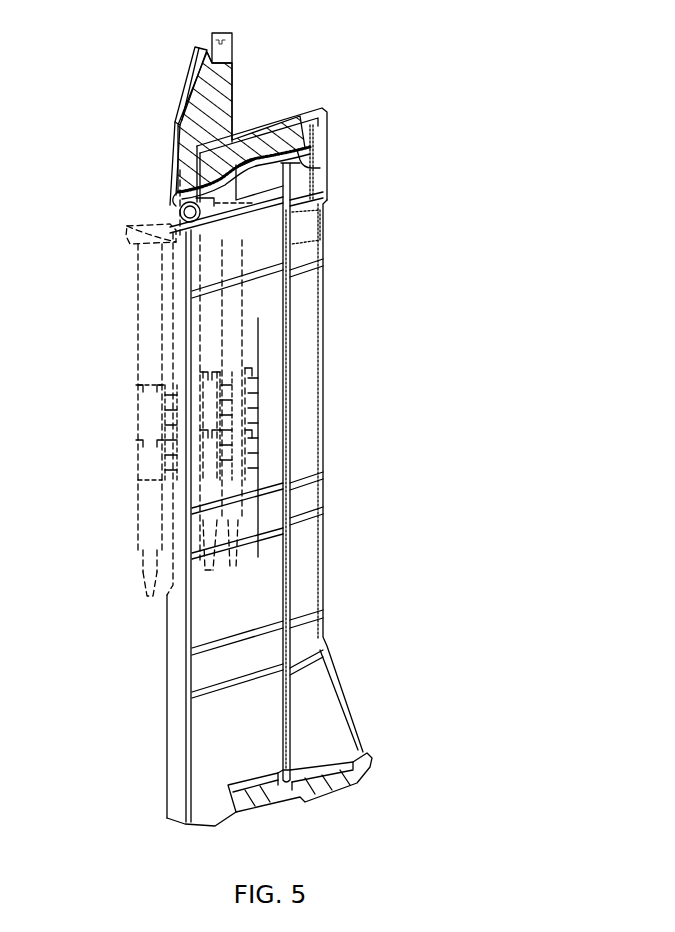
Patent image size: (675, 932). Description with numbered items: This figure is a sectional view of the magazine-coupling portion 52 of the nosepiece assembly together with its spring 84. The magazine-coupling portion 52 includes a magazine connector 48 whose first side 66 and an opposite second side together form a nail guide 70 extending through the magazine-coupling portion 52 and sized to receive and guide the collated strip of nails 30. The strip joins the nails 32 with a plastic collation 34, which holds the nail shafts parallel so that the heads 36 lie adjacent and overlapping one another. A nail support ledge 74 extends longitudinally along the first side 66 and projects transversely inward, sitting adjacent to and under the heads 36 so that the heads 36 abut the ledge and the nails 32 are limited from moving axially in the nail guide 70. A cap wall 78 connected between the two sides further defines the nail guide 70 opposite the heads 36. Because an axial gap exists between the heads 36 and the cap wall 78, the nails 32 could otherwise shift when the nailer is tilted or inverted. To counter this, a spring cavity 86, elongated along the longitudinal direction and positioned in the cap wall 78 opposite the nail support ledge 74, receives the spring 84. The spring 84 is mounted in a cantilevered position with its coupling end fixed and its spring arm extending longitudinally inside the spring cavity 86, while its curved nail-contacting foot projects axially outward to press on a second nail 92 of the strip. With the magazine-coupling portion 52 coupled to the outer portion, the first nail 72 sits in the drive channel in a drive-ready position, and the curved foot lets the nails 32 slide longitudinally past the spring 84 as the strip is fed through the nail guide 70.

The collated strip of nails 30 is at (112, 411).
The nails 32 is at (198, 537).
The plastic collation 34 is at (145, 489).
The heads 36 is at (212, 186).
The magazine connector 48 is at (313, 260).
The magazine-coupling portion 52 is at (312, 46).
The first side 66 is at (255, 190).
The nail guide 70 is at (272, 352).
The first nail 72 is at (148, 286).
The nail support ledge 74 is at (265, 200).
The cap wall 78 is at (312, 168).
The spring 84 is at (220, 180).
The spring cavity 86 is at (232, 168).
The second nail 92 is at (198, 335).